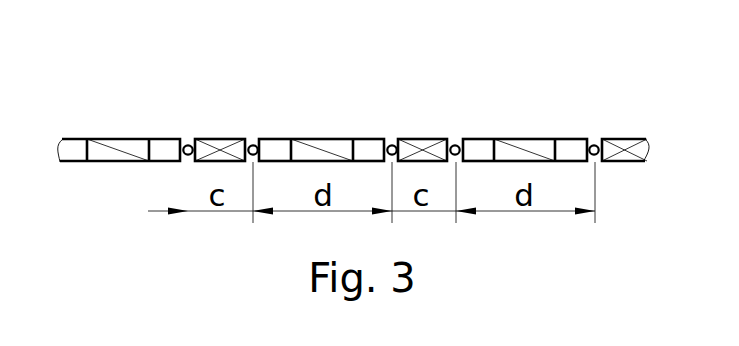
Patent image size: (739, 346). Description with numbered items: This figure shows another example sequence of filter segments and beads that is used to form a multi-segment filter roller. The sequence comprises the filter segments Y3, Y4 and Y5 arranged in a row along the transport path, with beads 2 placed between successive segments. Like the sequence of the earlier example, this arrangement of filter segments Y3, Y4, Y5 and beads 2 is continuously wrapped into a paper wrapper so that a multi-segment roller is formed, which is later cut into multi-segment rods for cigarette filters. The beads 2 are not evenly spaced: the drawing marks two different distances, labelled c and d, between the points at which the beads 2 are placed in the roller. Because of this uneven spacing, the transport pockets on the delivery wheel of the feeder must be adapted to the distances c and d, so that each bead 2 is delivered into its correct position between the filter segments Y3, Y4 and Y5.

The filter segment Y3 is at (135, 138).
The filter segment Y4 is at (271, 138).
The filter segment Y5 is at (440, 138).
The bead 2 is at (393, 138).